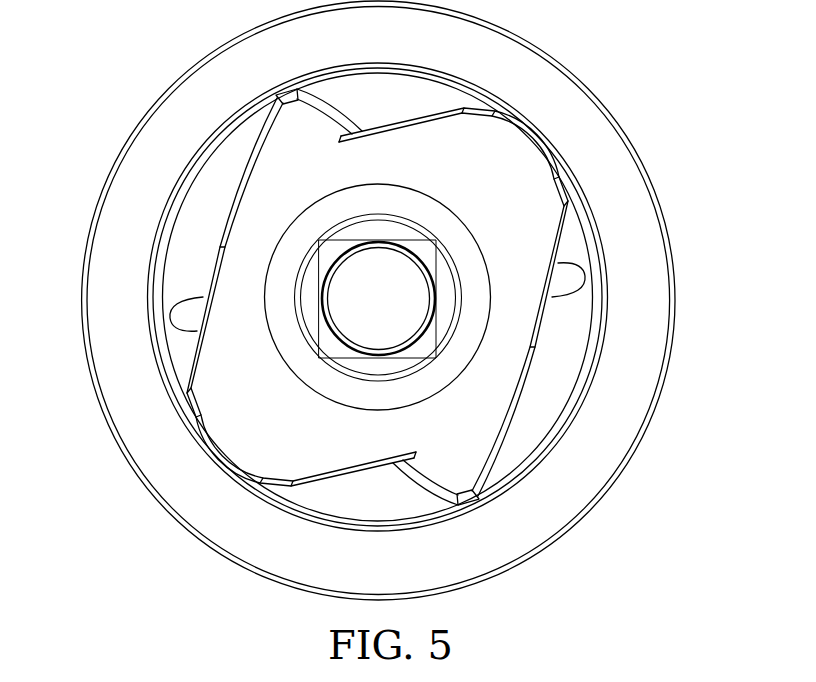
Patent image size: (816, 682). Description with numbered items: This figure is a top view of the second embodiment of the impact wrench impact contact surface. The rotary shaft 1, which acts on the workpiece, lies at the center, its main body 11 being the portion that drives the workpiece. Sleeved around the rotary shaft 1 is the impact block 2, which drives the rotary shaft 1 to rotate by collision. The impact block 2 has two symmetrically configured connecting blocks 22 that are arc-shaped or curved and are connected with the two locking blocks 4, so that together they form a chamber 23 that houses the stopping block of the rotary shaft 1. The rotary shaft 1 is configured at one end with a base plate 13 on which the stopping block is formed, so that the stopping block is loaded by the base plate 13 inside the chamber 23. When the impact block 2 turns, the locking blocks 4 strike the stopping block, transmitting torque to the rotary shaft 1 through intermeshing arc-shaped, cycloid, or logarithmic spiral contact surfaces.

The rotary shaft 1 is at (227, 220).
The impact block 2 is at (623, 125).
The locking block 4 is at (407, 100).
The main body 11 is at (393, 320).
The base plate 13 is at (540, 235).
The connecting block 22 is at (603, 344).
The chamber 23 is at (540, 408).